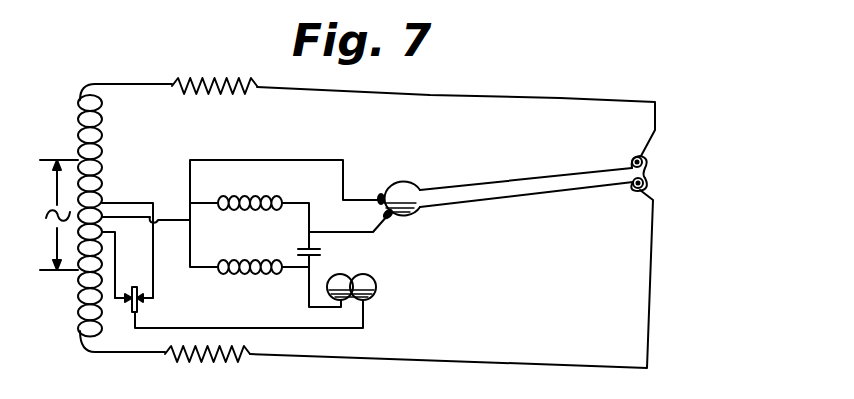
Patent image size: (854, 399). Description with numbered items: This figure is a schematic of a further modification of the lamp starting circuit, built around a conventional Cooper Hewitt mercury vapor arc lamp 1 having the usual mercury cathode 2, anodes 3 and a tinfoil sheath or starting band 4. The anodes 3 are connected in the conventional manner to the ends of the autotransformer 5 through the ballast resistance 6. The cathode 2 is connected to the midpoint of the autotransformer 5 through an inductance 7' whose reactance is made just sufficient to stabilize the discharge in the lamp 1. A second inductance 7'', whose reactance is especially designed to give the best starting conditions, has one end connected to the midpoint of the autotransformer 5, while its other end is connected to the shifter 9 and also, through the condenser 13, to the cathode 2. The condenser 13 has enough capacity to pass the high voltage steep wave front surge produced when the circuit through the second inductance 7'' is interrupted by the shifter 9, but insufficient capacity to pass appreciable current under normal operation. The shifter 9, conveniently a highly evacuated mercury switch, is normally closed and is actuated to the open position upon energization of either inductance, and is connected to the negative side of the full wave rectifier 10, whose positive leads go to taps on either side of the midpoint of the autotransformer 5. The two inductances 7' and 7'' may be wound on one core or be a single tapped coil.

The mercury vapor arc lamp 1 is at (543, 185).
The mercury cathode 2 is at (400, 200).
The anodes 3 is at (645, 183).
The starting band 4 is at (412, 215).
The autotransformer 5 is at (103, 136).
The ballast resistance 6 is at (214, 372).
The inductance 7' is at (250, 186).
The second inductance 7'' is at (246, 250).
The shifter 9 is at (372, 278).
The full wave rectifier 10 is at (136, 286).
The condenser 13 is at (299, 249).